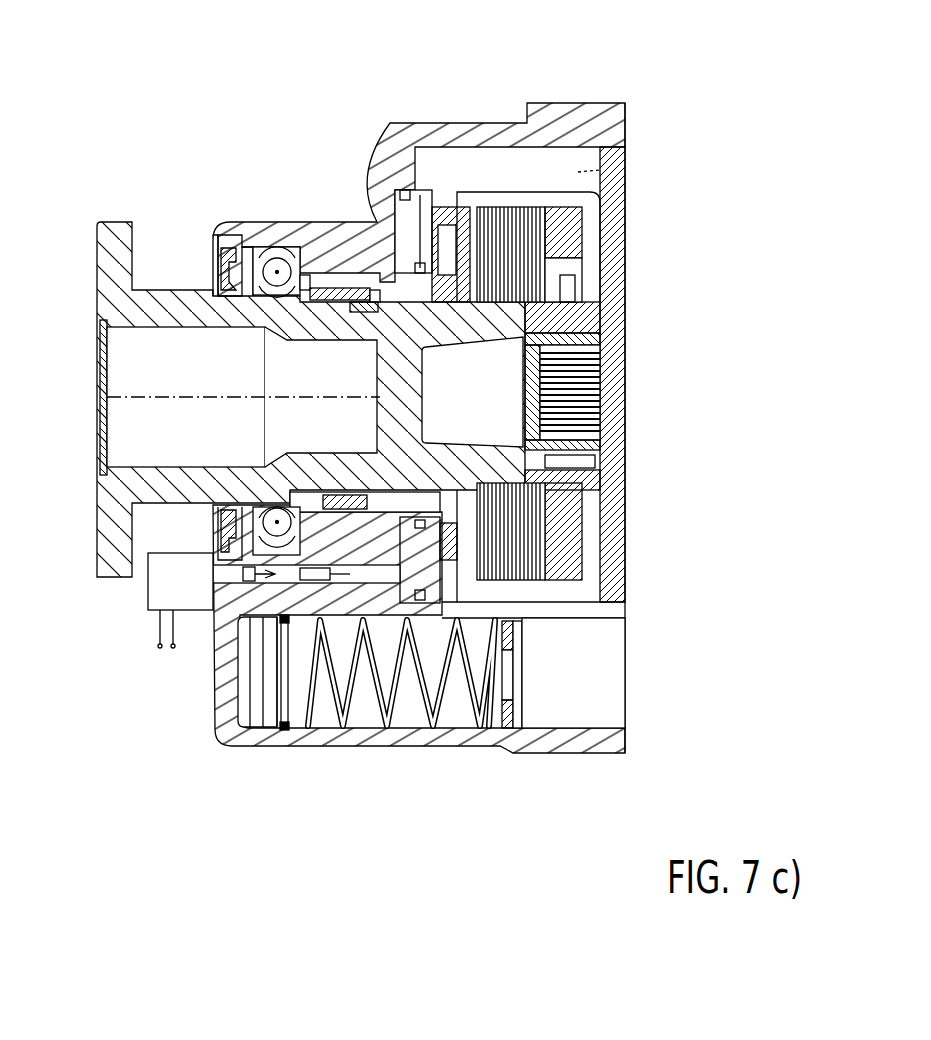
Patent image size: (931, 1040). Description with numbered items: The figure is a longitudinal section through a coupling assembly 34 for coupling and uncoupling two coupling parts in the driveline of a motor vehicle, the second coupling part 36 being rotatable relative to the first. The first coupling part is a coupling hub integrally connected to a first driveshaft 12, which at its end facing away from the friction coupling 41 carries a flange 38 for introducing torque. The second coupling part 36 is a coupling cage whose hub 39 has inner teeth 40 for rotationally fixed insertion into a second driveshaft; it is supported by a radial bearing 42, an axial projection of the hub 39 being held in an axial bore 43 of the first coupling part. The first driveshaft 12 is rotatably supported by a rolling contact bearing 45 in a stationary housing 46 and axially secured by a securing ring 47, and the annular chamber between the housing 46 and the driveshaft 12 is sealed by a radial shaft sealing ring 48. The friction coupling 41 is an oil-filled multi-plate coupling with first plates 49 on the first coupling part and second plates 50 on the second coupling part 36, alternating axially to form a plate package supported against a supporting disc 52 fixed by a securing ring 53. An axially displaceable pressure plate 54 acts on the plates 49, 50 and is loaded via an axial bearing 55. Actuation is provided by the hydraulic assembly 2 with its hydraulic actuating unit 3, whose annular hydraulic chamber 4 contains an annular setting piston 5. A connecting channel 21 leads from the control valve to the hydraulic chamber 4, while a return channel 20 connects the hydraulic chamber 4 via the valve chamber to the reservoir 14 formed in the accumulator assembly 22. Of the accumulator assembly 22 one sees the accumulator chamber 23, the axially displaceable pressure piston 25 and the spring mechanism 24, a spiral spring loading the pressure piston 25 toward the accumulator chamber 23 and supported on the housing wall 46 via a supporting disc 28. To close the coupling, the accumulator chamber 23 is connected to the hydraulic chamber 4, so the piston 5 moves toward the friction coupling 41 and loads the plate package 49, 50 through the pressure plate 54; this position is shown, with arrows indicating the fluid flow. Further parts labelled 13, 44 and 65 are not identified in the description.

The hydraulic assembly 2 is at (223, 777).
The hydraulic actuating unit 3 is at (400, 168).
The hydraulic chamber 4 is at (372, 185).
The setting piston 5 is at (419, 200).
The first driveshaft 12 is at (203, 318).
The retaining ring 13 is at (322, 293).
The reservoir 14 is at (457, 728).
The return channel 20 is at (334, 728).
The connecting channel 21 is at (363, 728).
The accumulator assembly 22 is at (292, 748).
The accumulator chamber 23 is at (240, 690).
The spring mechanism 24 is at (417, 728).
The pressure piston 25 is at (268, 728).
The supporting disc 28 is at (512, 753).
The coupling assembly 34 is at (256, 102).
The second coupling part 36 is at (608, 237).
The flange 38 is at (100, 245).
The hub 39 is at (606, 358).
The inner teeth 40 is at (606, 389).
The friction coupling 41 is at (508, 172).
The radial bearing 42 is at (608, 461).
The axial bore 43 is at (606, 430).
The securing ring 44 is at (366, 312).
The rolling contact bearing 45 is at (283, 270).
The stationary housing 46 is at (326, 228).
The securing ring 47 is at (249, 290).
The radial shaft sealing ring 48 is at (217, 253).
The first plates 49 is at (522, 197).
The second plates 50 is at (555, 200).
The supporting disc 52 is at (608, 540).
The securing ring 53 is at (606, 498).
The pressure plate 54 is at (450, 190).
The axial bearing 55 is at (443, 537).
The spacer ring 65 is at (327, 312).